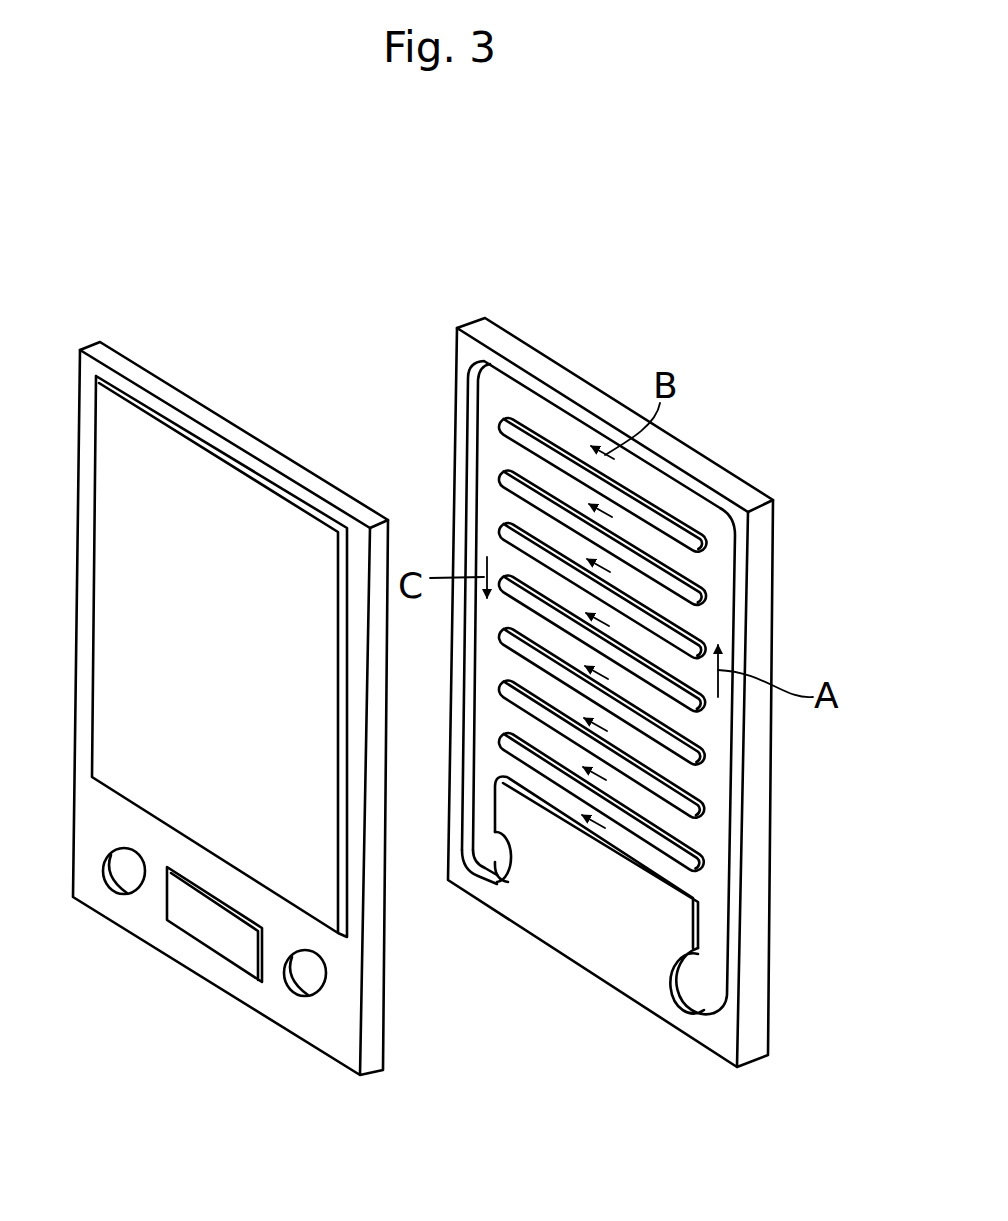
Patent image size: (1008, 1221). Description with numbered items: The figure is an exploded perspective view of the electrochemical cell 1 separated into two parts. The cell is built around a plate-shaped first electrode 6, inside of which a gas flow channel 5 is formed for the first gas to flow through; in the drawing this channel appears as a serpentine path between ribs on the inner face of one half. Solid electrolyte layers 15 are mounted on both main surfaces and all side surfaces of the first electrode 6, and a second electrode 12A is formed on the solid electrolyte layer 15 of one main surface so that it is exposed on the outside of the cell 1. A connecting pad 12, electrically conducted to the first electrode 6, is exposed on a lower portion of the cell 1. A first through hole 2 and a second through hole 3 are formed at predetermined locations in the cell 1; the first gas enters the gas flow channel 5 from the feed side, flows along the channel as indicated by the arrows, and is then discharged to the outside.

The electrochemical cell 1 is at (697, 422).
The first through hole 2 is at (308, 987).
The second through hole 3 is at (123, 886).
The gas flow channel 5 is at (528, 470).
The first electrode 6 is at (260, 434).
The connecting pad 12 is at (222, 940).
The second electrode 12A is at (278, 512).
The solid electrolyte layer 15 is at (170, 388).